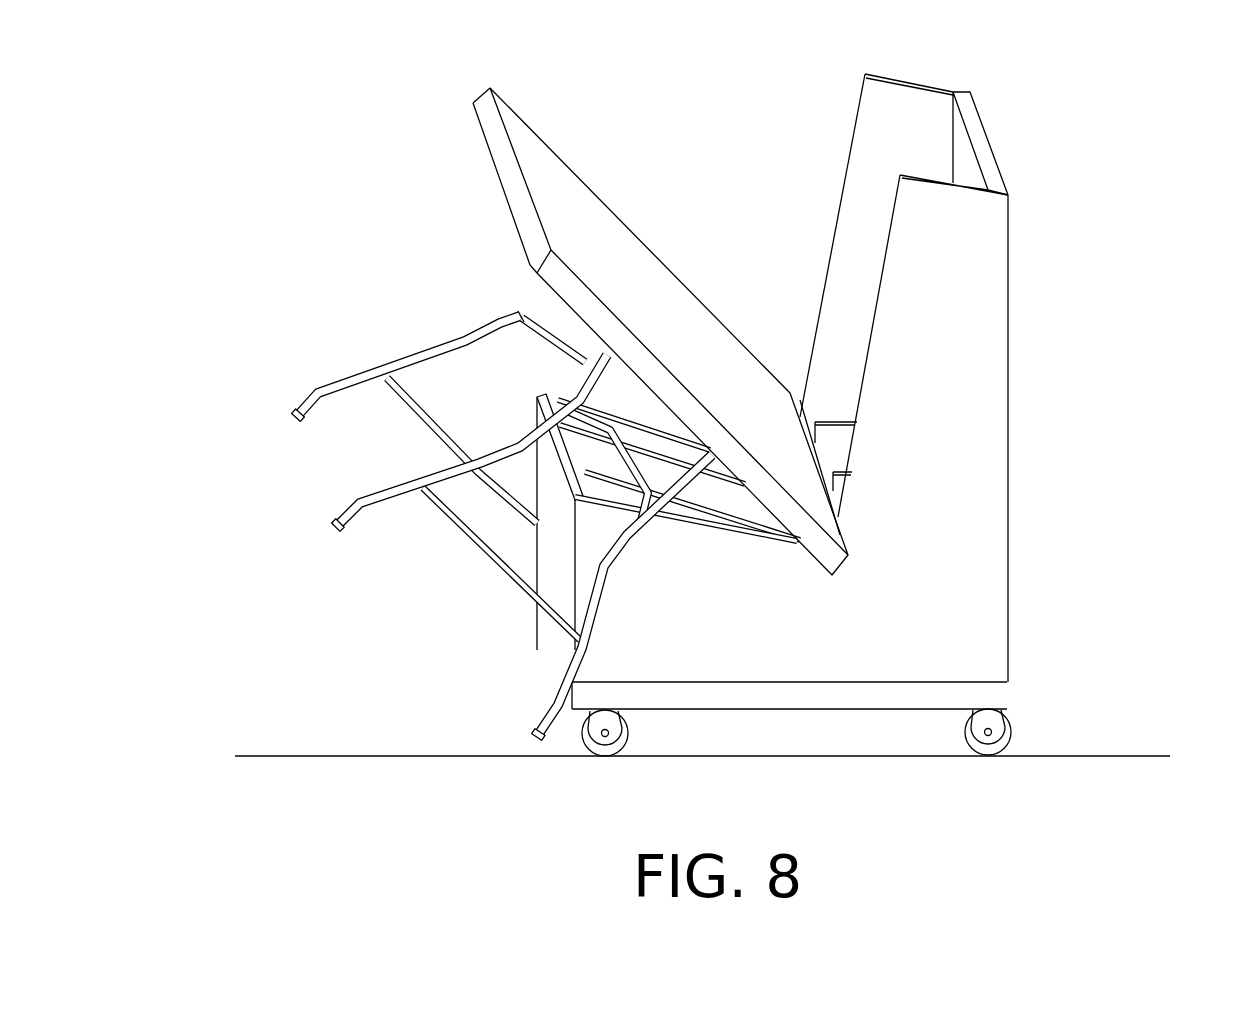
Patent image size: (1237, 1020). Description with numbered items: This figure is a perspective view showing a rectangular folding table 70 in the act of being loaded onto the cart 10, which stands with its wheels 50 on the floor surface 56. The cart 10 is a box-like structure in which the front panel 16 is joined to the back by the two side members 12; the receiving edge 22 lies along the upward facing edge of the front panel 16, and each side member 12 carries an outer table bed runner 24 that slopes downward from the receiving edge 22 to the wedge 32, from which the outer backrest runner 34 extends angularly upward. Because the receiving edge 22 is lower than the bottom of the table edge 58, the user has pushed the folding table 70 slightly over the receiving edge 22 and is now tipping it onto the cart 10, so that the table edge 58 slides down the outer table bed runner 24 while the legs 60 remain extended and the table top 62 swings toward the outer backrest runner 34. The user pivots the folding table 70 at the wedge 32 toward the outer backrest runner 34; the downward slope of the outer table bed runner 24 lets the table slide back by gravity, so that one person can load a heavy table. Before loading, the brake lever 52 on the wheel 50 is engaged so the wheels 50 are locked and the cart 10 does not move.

The cart 10 is at (1117, 172).
The side member 12 is at (858, 230).
The front panel 16 is at (553, 555).
The receiving edge 22 is at (563, 452).
The outer table bed runner 24 is at (740, 527).
The wedge 32 is at (843, 535).
The outer backrest runner 34 is at (870, 343).
The wheel 50 is at (1012, 740).
The brake lever 52 is at (1010, 717).
The floor surface 56 is at (285, 735).
The table edge 58 is at (473, 105).
The legs 60 is at (507, 307).
The table top 62 is at (552, 173).
The folding table 70 is at (526, 80).